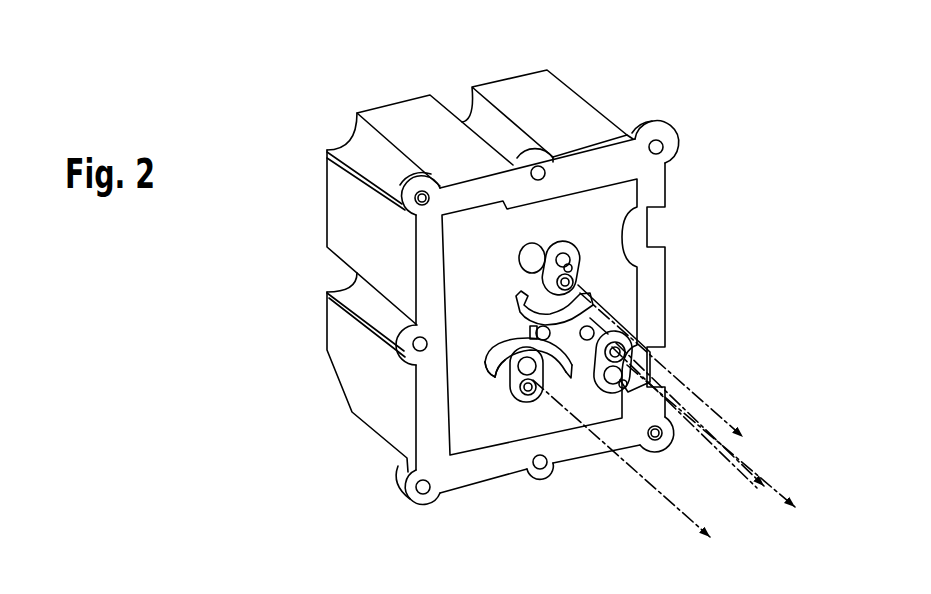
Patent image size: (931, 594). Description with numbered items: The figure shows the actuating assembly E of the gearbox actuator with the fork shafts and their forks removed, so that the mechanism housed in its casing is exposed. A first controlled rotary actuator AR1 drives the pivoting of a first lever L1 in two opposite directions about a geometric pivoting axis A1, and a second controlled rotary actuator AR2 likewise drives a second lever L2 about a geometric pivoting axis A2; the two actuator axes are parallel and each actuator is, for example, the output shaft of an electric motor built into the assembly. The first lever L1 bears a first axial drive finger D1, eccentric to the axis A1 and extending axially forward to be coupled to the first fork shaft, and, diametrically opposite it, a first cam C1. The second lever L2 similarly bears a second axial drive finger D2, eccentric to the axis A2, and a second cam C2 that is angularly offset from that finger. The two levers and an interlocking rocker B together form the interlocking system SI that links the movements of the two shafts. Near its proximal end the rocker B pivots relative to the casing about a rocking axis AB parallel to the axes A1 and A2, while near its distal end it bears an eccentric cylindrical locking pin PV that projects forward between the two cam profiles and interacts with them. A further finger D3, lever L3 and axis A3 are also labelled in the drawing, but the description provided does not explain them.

The actuating assembly E is at (584, 82).
The interlocking system SI is at (616, 297).
The first cam C1 is at (513, 308).
The second cam C2 is at (572, 380).
The eccentric cylindrical locking pin PV is at (528, 328).
The first axial drive finger D1 is at (580, 250).
The second axial drive finger D2 is at (520, 410).
The third distributor D3 is at (645, 378).
The first lever L1 is at (587, 282).
The second lever L2 is at (518, 367).
The third slide L3 is at (647, 348).
The first controlled rotary actuator AR1 is at (520, 256).
The second controlled rotary actuator AR2 is at (487, 364).
The interlocking rocker B is at (603, 331).
The geometric pivoting axis A1 is at (679, 372).
The geometric pivoting axis A2 is at (637, 469).
The third axis A3 is at (726, 446).
The rocking axis AB is at (737, 468).